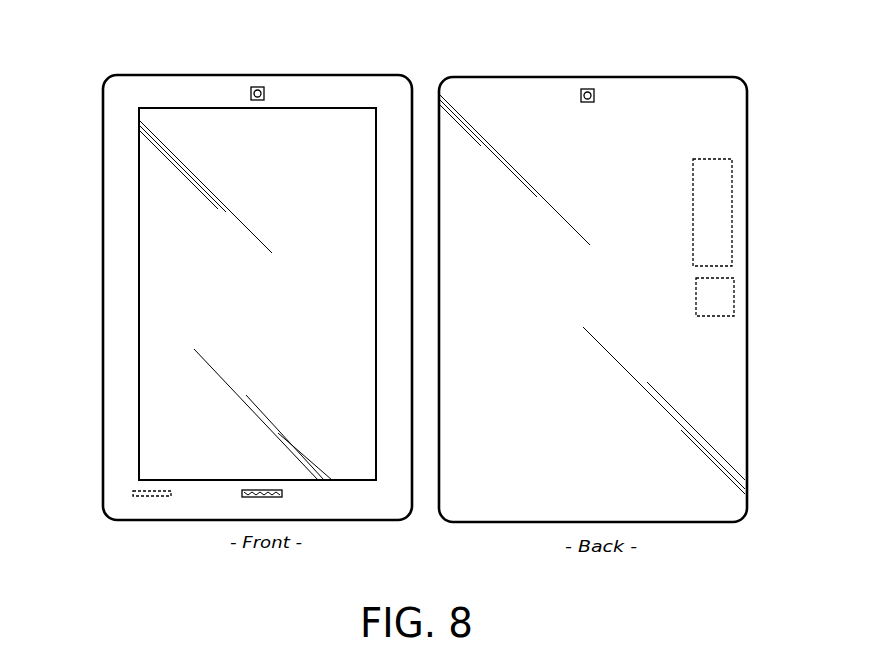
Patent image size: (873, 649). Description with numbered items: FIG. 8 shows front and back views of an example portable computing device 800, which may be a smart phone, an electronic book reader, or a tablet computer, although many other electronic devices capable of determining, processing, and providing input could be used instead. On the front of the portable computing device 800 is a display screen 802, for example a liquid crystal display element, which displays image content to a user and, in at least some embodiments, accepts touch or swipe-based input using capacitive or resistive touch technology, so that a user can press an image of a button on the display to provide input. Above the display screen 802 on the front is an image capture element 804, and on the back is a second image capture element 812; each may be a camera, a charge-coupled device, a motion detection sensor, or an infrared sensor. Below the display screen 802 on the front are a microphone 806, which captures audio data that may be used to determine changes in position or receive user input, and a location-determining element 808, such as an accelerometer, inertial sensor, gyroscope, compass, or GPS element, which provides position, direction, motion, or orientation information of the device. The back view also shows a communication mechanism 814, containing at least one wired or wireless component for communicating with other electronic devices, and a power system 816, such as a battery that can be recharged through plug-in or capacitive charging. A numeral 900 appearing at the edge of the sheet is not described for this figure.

The portable computing device 800 is at (790, 82).
The display screen 802 is at (139, 215).
The image capture element 804 is at (253, 86).
The microphone 806 is at (270, 497).
The location-determining element 808 is at (148, 497).
The image capture element 812 is at (587, 89).
The communication mechanism 814 is at (732, 228).
The power system 816 is at (734, 300).
The electronic device of FIG. 9 900 is at (767, 648).